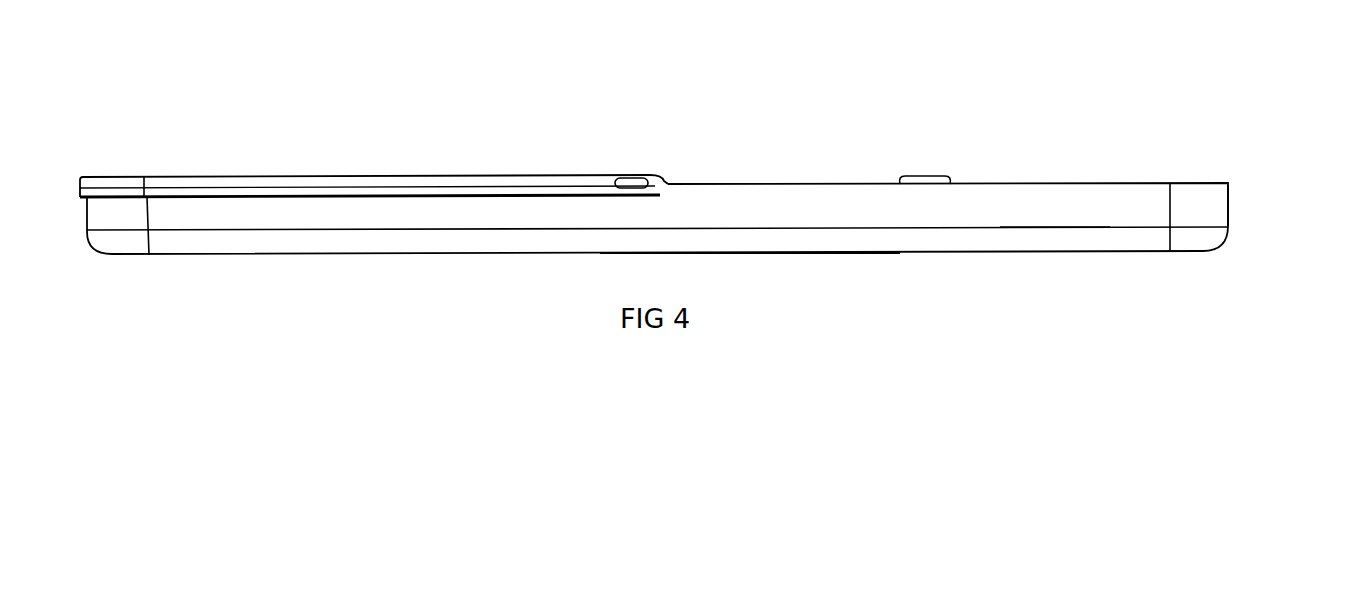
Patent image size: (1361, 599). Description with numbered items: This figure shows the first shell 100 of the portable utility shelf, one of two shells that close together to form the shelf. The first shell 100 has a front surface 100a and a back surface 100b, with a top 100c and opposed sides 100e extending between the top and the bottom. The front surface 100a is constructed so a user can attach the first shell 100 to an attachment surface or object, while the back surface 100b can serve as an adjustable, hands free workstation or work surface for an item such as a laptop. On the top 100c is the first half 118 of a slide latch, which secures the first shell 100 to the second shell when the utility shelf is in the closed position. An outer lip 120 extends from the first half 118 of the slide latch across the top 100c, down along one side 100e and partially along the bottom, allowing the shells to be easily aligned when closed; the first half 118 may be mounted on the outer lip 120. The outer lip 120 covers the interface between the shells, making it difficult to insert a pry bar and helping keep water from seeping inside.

The first shell 100 is at (818, 211).
The front surface 100a is at (829, 255).
The back surface 100b is at (790, 183).
The top 100c is at (1053, 210).
The side 100e is at (1230, 215).
The first half of slide latch 118 is at (643, 185).
The outer lip 120 is at (181, 186).